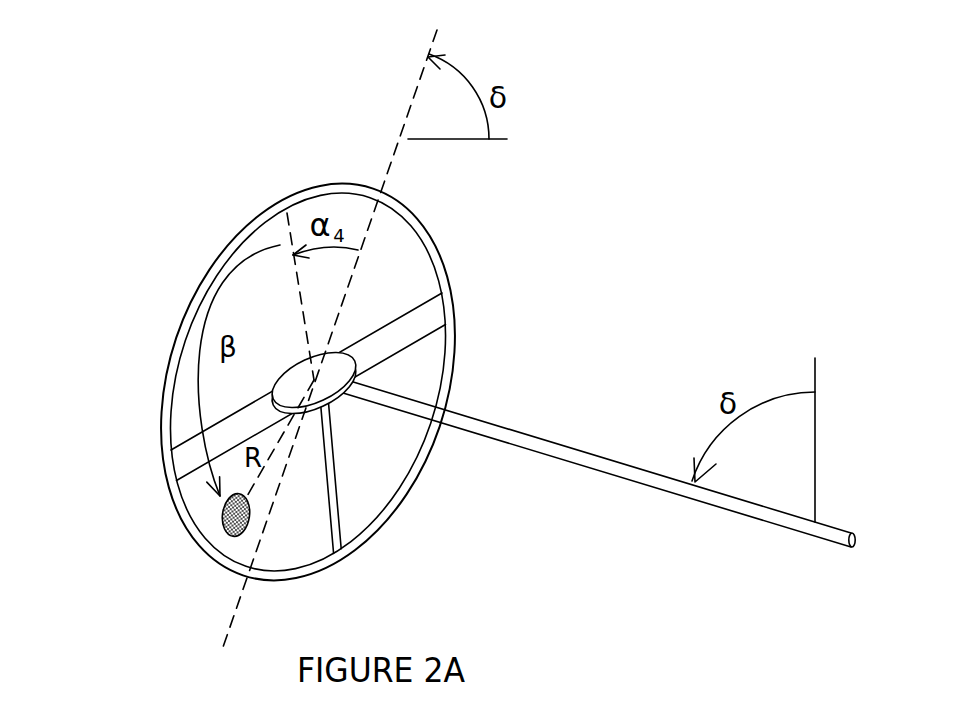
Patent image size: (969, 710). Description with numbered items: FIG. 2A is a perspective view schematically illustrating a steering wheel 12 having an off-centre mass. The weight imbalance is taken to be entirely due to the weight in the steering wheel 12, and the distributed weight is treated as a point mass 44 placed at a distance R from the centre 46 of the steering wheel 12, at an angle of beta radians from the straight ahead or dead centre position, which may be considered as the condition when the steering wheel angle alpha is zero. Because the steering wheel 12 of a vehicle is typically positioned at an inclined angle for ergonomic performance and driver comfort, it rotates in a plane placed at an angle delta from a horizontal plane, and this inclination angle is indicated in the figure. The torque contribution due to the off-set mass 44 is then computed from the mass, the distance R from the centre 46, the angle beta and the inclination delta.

The steering wheel 12 is at (160, 395).
The point mass 44 is at (235, 525).
The centre 46 is at (333, 393).